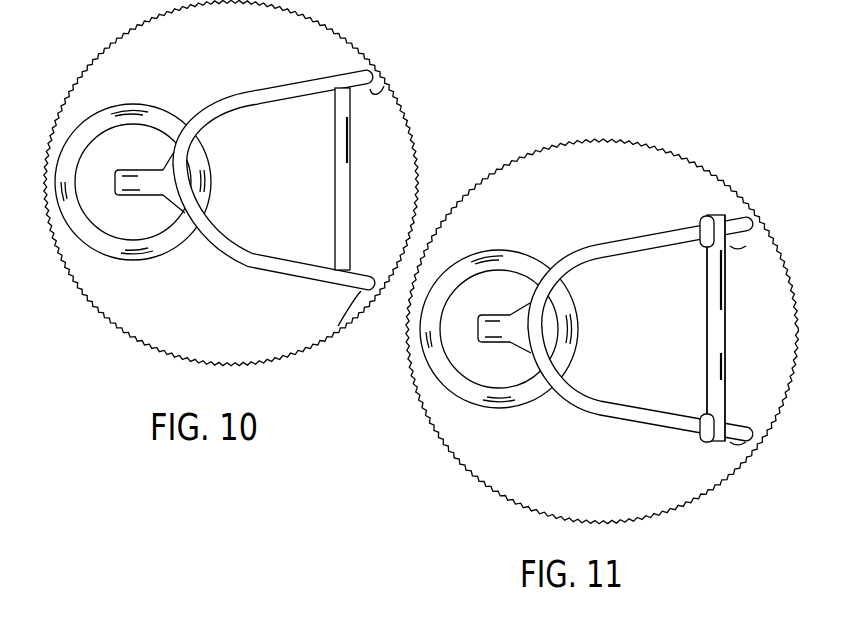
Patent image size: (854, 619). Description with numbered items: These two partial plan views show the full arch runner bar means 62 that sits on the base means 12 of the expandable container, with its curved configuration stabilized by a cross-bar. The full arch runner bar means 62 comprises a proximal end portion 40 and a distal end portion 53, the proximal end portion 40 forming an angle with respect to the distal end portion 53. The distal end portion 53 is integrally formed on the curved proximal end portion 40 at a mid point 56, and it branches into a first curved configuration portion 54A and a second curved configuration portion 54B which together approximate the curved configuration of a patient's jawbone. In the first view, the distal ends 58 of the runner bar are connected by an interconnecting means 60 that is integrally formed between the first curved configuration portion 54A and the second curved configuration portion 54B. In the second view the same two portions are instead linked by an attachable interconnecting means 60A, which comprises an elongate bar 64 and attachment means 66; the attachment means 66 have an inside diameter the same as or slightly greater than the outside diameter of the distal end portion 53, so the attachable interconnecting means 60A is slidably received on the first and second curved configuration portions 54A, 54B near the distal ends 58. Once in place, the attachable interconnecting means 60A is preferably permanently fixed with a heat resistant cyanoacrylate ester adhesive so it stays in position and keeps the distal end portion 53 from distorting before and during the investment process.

In FIG. 10, the base means 12 is at (256, 183).
In FIG. 11, the base means 12 is at (602, 310).
In FIG. 10, the proximal end portion 40 is at (142, 197).
In FIG. 11, the proximal end portion 40 is at (505, 343).
In FIG. 10, the distal end portion 53 is at (198, 256).
In FIG. 11, the distal end portion 53 is at (567, 402).
In FIG. 10, the first curved configuration portion 54A is at (283, 280).
In FIG. 11, the first curved configuration portion 54A is at (640, 423).
In FIG. 10, the second curved configuration portion 54B is at (277, 58).
In FIG. 11, the second curved configuration portion 54B is at (636, 239).
In FIG. 10, the mid point 56 is at (164, 172).
In FIG. 11, the mid point 56 is at (520, 328).
In FIG. 10, the distal ends 58 is at (387, 84).
In FIG. 11, the distal ends 58 is at (732, 248).
In FIG. 10, the interconnecting means 60 is at (353, 168).
In FIG. 11, the attachable interconnecting means 60A is at (727, 337).
In FIG. 10, the full arch runner bar means 62 is at (307, 63).
In FIG. 11, the full arch runner bar means 62 is at (665, 150).
In FIG. 11, the elongate bar 64 is at (707, 303).
In FIG. 11, the attachment means 66 is at (716, 218).